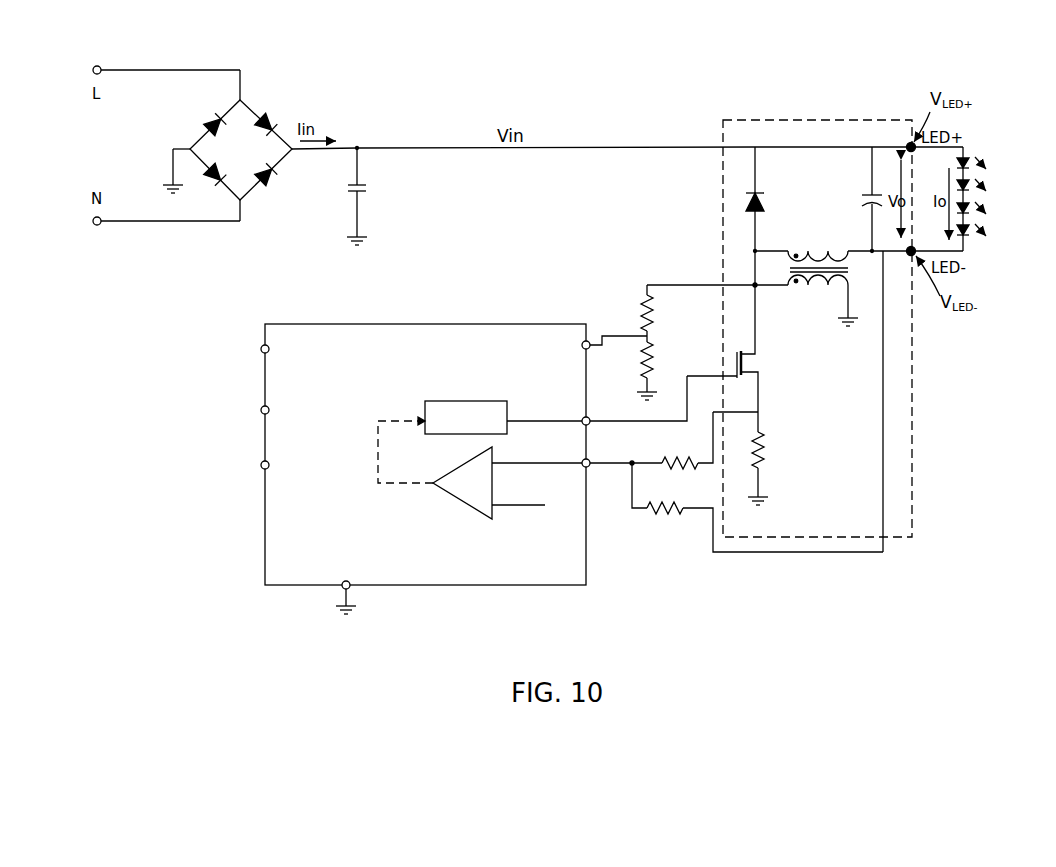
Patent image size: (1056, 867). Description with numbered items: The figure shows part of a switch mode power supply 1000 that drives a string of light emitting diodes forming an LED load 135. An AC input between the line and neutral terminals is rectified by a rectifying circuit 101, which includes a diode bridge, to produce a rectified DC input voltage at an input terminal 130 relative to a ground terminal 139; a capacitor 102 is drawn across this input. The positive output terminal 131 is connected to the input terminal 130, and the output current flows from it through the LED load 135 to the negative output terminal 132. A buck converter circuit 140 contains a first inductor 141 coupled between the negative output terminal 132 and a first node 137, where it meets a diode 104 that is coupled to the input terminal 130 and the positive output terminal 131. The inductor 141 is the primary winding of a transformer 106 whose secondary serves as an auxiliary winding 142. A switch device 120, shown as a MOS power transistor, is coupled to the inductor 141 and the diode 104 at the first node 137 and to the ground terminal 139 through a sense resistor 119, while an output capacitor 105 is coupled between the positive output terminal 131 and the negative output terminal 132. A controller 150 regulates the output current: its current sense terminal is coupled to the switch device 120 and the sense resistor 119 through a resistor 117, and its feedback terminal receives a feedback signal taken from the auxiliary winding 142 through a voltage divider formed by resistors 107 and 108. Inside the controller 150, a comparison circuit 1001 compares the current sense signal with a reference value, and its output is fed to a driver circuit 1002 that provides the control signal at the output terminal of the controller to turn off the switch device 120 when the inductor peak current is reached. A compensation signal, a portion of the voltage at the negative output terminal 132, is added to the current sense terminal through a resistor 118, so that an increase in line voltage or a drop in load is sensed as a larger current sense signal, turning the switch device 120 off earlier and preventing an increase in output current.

The switch mode power supply 1000 is at (758, 52).
The rectifying circuit 101 is at (241, 146).
The input capacitor 102 is at (329, 192).
The input terminal 130 is at (356, 139).
The ground terminal 139 is at (511, 406).
The buck converter circuit 140 is at (842, 119).
The diode 104 is at (771, 250).
The output capacitor 105 is at (856, 200).
The transformer 106 is at (802, 274).
The first inductor 141 is at (818, 246).
The auxiliary winding 142 is at (818, 296).
The first node 137 is at (739, 250).
The positive output terminal 131 is at (897, 137).
The negative output terminal 132 is at (897, 261).
The LED load 135 is at (989, 146).
The resistor 107 is at (658, 313).
The resistor 108 is at (659, 367).
The switch device 120 is at (739, 381).
The sense resistor 119 is at (758, 454).
The resistor 117 is at (684, 440).
The resistor 118 is at (757, 507).
The controller 150 is at (385, 361).
The comparison circuit 1001 is at (448, 499).
The driver circuit 1002 is at (450, 401).